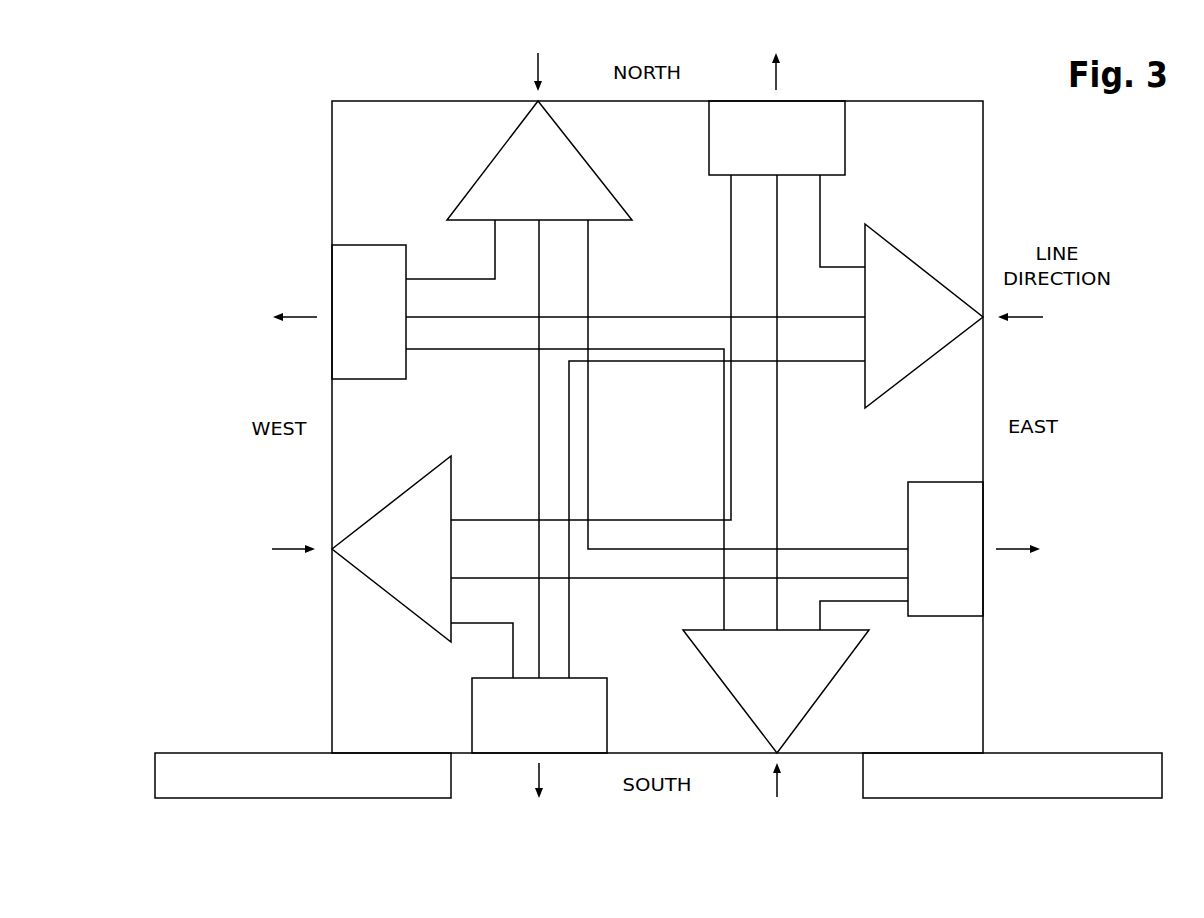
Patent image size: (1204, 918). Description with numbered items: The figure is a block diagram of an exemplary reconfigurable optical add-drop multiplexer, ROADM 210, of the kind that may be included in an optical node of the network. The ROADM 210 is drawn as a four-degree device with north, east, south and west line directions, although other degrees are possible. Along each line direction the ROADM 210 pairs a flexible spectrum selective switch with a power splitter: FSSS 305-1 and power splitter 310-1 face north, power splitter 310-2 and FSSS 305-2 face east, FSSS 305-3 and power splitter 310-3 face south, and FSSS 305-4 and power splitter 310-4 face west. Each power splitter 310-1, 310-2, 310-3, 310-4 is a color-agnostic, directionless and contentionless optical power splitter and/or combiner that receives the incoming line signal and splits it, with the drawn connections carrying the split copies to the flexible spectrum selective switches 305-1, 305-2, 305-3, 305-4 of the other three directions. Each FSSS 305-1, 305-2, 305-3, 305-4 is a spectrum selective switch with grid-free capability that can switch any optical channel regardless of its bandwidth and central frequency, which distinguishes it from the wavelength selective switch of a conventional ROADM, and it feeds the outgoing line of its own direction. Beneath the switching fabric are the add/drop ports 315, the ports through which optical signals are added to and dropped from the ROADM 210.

The ROADM 210 is at (296, 96).
The flexible spectrum selective switch 305-1 is at (751, 160).
The flexible spectrum selective switch 305-2 is at (921, 523).
The flexible spectrum selective switch 305-3 is at (513, 738).
The flexible spectrum selective switch 305-4 is at (392, 287).
The power splitter 310-1 is at (512, 215).
The power splitter 310-2 is at (867, 290).
The power splitter 310-3 is at (751, 713).
The power splitter 310-4 is at (448, 522).
The add/drop ports 315 is at (377, 785).